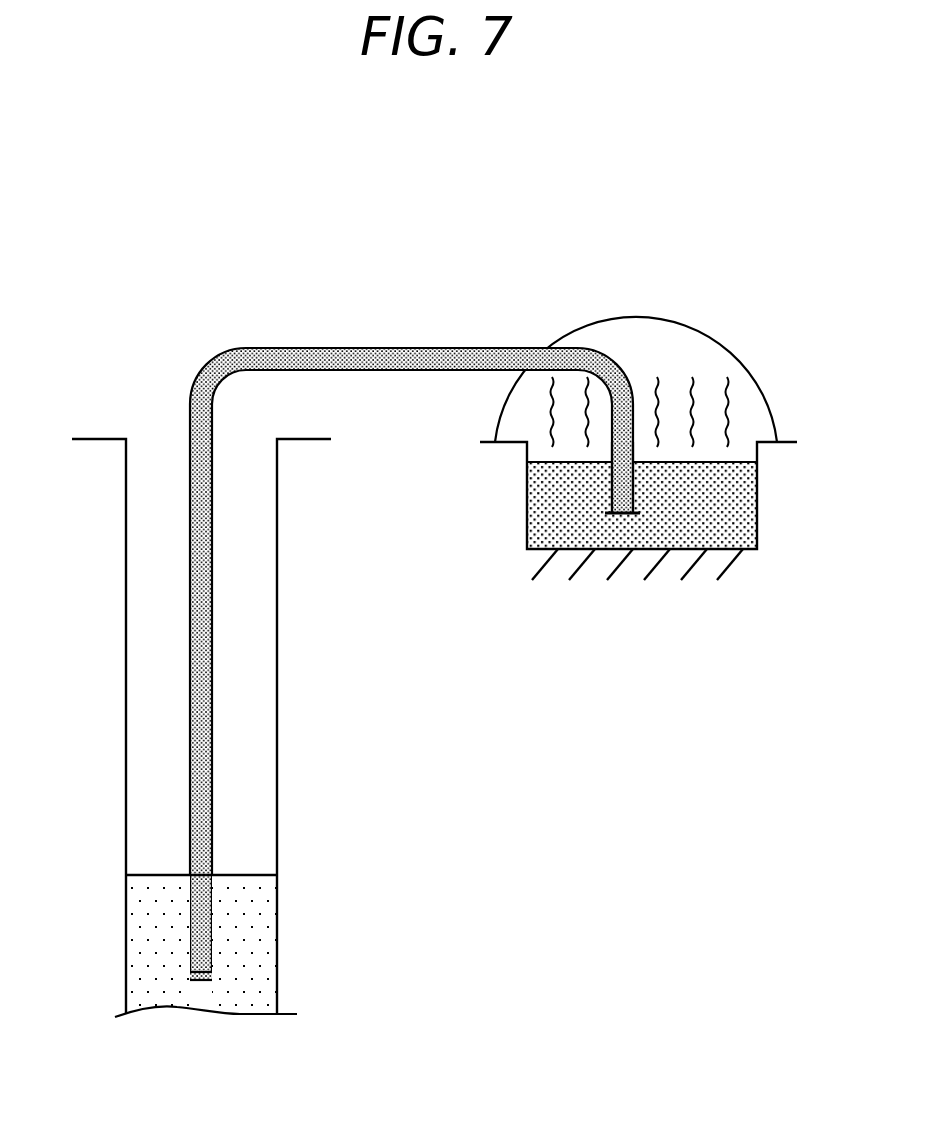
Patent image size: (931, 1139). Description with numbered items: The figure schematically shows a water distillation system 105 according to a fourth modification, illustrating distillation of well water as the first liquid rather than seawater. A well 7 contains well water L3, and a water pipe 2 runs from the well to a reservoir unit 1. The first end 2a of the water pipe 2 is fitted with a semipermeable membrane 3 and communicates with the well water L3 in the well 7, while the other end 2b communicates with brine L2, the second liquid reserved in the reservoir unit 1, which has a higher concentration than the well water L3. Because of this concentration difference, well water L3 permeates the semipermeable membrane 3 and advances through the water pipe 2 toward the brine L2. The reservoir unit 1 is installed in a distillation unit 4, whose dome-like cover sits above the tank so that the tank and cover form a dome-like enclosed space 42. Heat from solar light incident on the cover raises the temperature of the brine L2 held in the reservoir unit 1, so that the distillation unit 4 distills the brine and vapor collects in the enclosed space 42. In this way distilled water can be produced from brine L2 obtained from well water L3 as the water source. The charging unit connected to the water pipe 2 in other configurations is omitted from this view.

The water distillation system 105 is at (653, 370).
The distillation unit 4 is at (720, 318).
The dome-like enclosed space 42 is at (655, 327).
The reservoir unit 1 is at (527, 508).
The brine L2 is at (745, 510).
The other end of the water pipe 2b is at (634, 491).
The water pipe 2 is at (378, 660).
The first end of the water pipe 2a is at (193, 937).
The semipermeable membrane 3 is at (203, 981).
The well water L3 is at (260, 942).
The well 7 is at (122, 577).